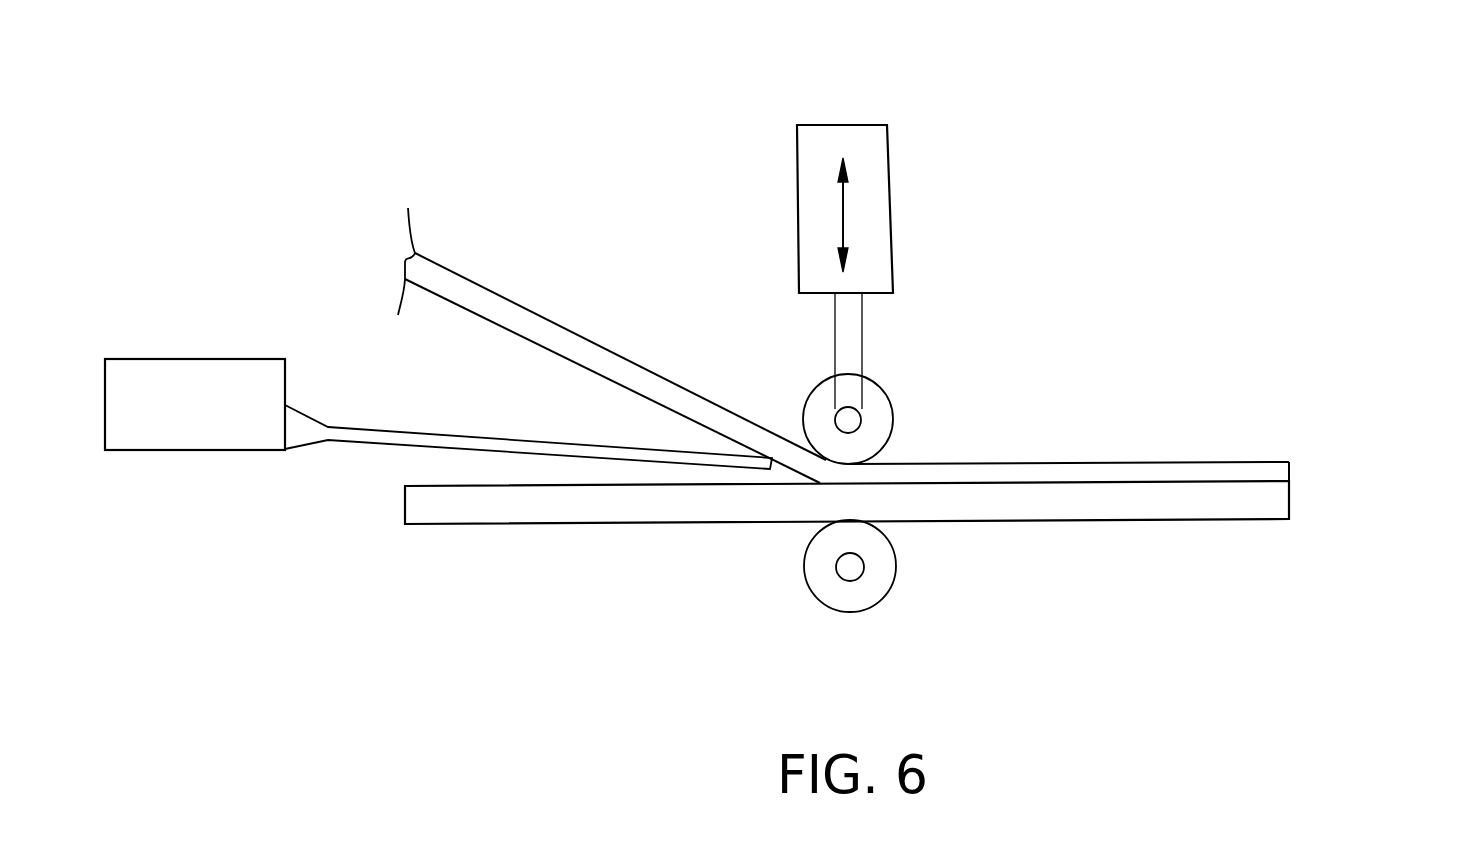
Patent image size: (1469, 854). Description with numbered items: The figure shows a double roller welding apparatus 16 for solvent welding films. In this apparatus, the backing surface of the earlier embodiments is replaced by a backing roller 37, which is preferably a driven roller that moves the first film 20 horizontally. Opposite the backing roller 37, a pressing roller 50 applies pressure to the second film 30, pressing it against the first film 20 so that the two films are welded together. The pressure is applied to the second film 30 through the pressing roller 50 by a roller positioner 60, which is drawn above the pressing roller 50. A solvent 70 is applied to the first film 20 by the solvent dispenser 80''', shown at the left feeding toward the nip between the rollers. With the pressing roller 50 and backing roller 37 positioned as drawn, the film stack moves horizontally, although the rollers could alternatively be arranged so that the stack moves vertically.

The double roller welding apparatus 16 is at (1312, 258).
The first film 20 is at (1290, 500).
The second film 30 is at (493, 290).
The backing roller 37 is at (890, 592).
The pressing roller 50 is at (888, 397).
The roller positioner 60 is at (890, 208).
The solvent 70 is at (200, 430).
The solvent dispenser 80''' is at (438, 463).